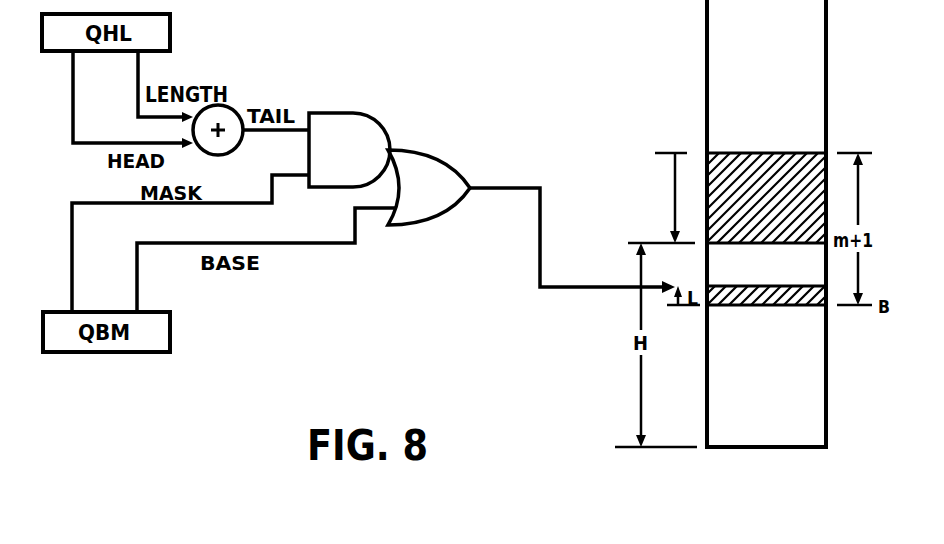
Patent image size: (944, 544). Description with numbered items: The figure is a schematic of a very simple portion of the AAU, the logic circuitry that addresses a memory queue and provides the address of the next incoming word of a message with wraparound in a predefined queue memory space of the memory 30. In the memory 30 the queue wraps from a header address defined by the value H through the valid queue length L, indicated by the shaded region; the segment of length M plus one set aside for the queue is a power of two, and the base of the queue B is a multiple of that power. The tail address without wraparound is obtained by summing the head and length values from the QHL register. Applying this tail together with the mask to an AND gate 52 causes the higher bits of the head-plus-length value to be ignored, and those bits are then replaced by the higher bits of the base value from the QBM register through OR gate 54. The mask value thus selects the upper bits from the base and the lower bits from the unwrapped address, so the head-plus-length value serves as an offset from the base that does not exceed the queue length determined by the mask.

The memory 30 is at (707, 75).
The AND gate 52 is at (347, 112).
The OR gate 54 is at (440, 153).